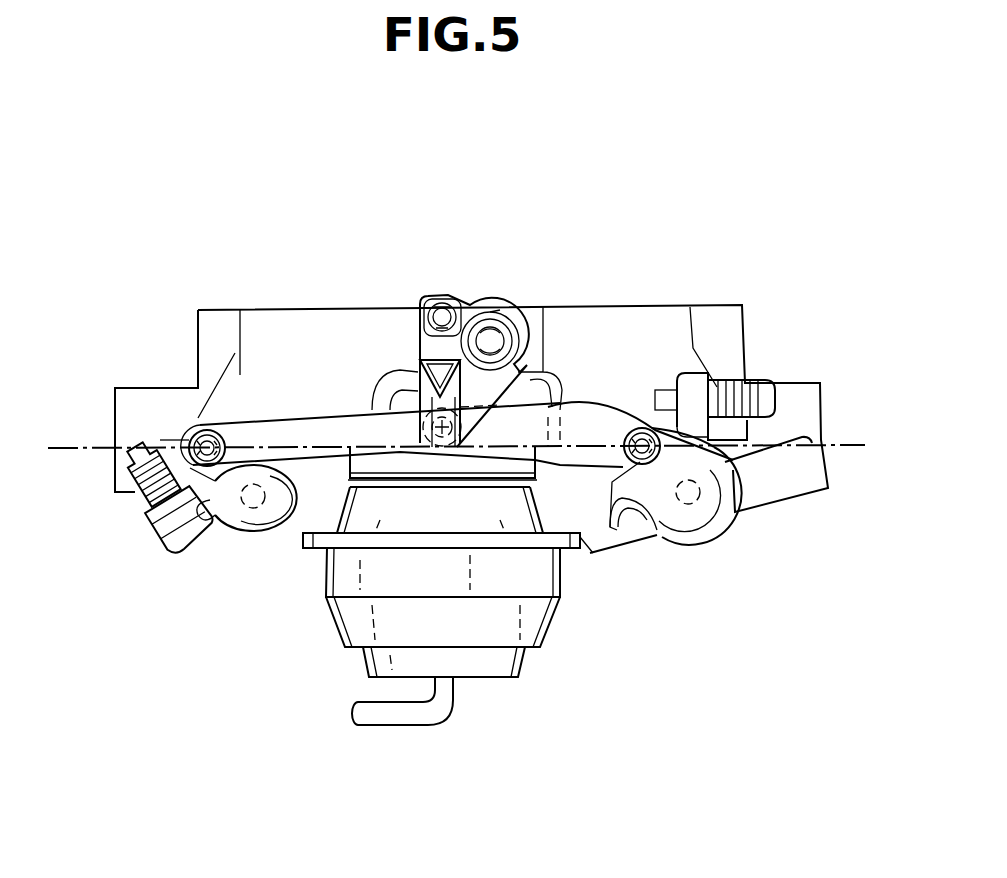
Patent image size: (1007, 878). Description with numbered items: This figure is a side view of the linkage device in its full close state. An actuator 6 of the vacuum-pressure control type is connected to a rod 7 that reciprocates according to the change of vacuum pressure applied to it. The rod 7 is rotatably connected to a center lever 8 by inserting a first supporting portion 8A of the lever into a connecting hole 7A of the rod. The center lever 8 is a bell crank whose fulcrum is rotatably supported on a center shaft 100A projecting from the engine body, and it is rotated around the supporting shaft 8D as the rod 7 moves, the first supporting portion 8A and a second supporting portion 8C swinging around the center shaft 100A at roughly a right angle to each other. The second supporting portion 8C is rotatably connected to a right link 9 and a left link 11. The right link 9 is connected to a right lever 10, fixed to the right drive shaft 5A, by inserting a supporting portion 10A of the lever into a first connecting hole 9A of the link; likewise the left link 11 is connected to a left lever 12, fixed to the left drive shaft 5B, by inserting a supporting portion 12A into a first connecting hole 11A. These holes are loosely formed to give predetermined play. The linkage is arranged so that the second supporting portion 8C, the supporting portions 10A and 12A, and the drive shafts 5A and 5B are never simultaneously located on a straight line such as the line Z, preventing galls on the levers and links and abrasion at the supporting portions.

The line Z is at (848, 445).
The center shaft 100A is at (547, 350).
The left link 11 is at (287, 430).
The first connecting hole 11A is at (198, 433).
The supporting portion 12A is at (189, 445).
The left lever 12 is at (232, 540).
The left drive shaft 5B is at (255, 508).
The right drive shaft 5A is at (690, 497).
The actuator 6 is at (500, 665).
The rod 7 is at (425, 405).
The connecting hole 7A is at (500, 272).
The center lever 8 is at (465, 293).
The first supporting portion 8A is at (443, 298).
The second supporting portion 8C is at (410, 410).
The supporting shaft 8D is at (505, 340).
The right link 9 is at (588, 420).
The first connecting hole 9A is at (614, 530).
The right lever 10 is at (708, 500).
The supporting portion 10A is at (647, 465).